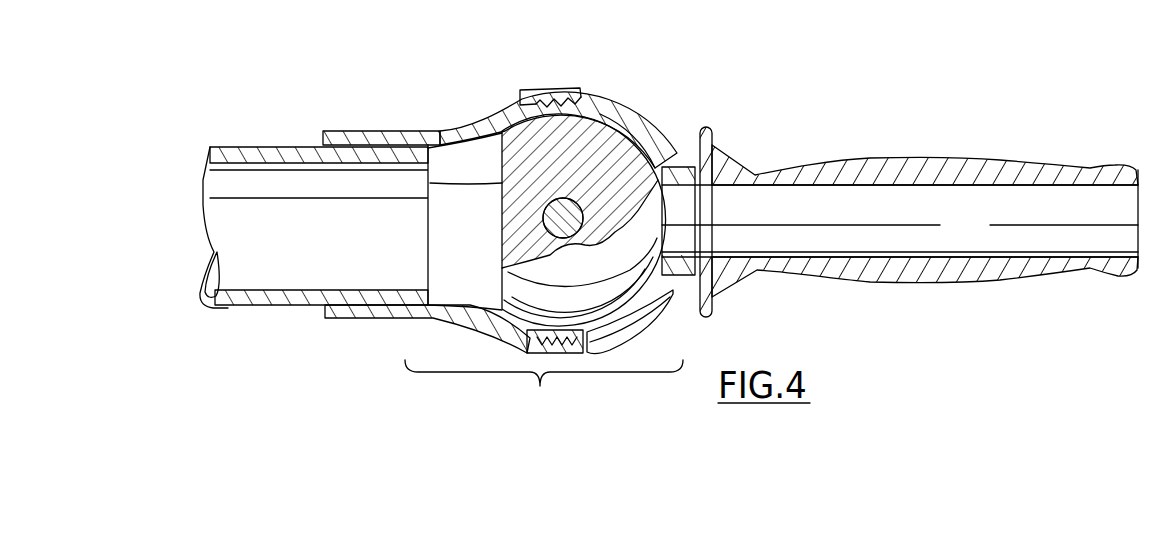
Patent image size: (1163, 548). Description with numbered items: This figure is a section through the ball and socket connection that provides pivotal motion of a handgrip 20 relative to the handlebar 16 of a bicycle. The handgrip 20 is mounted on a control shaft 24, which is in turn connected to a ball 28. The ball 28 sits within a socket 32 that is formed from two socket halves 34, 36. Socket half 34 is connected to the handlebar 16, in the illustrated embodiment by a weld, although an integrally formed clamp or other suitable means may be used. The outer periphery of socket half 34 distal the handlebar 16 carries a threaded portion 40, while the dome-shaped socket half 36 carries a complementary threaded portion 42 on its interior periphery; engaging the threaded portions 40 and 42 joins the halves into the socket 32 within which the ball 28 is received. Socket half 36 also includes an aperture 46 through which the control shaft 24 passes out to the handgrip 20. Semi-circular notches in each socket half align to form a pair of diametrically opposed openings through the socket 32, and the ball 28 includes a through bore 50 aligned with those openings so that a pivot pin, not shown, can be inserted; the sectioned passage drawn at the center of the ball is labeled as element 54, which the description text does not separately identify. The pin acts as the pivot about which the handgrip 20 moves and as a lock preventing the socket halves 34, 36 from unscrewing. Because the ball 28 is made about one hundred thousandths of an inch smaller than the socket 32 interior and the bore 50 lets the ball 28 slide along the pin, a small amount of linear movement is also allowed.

The handlebar 16 is at (248, 146).
The handgrip 20 is at (955, 165).
The control shaft 24 is at (981, 228).
The ball 28 is at (620, 112).
The socket 32 is at (544, 392).
The socket half 34 is at (373, 133).
The socket half 36 is at (641, 136).
The threaded portion 40 is at (563, 103).
The threaded portion 42 is at (545, 86).
The aperture 46 is at (677, 290).
The through bore 50 is at (516, 232).
The bore 54 is at (578, 223).